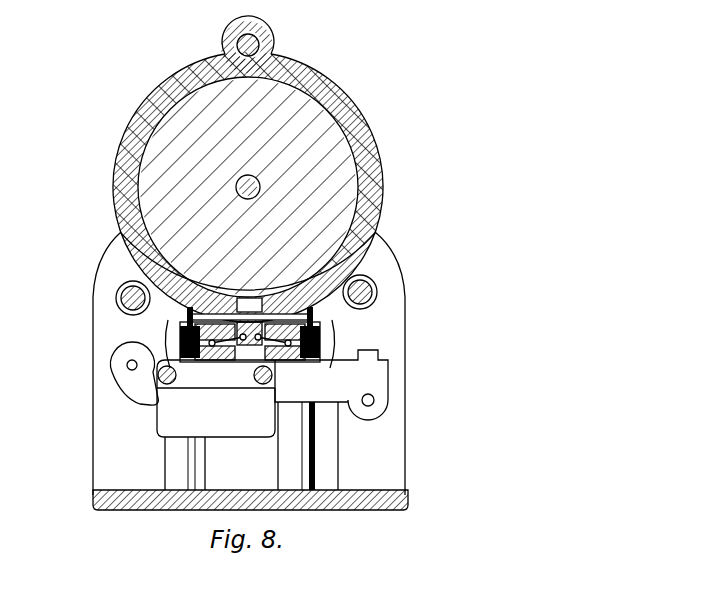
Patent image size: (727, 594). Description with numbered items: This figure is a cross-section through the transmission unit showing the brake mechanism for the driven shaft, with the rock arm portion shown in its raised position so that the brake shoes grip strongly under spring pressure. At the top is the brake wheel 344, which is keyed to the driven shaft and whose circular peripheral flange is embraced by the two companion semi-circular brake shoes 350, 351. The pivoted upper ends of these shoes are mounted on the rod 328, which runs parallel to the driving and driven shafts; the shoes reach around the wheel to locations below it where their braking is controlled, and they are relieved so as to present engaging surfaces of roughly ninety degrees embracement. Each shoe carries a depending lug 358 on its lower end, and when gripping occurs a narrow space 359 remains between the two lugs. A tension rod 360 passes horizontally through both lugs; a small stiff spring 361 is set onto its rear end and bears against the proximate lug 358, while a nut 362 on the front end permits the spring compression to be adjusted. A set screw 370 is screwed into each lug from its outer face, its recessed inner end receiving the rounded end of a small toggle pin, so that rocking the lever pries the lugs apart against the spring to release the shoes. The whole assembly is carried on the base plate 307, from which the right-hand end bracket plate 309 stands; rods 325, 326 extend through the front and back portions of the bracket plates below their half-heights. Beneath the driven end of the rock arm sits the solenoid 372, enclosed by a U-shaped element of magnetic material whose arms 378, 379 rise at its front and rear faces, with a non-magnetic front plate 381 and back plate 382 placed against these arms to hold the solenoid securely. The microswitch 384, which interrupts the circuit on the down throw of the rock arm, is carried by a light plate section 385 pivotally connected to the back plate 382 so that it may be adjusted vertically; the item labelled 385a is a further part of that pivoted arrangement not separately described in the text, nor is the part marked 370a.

The base plate 307 is at (405, 499).
The right hand end bracket plate 309 is at (390, 340).
The rod 325 is at (378, 286).
The rod 326 is at (116, 300).
The rod 328 is at (266, 36).
The brake wheel 344 is at (333, 128).
The brake shoe 350 is at (367, 158).
The brake shoe 351 is at (127, 163).
The depending lug 358 is at (300, 368).
The narrow space 359 is at (148, 243).
The tension rod 360 is at (132, 255).
The spring 361 is at (188, 311).
The nut 362 is at (313, 308).
The set screw 370 is at (180, 338).
The spring block 370a is at (182, 350).
The solenoid 372 is at (283, 472).
The arm of U-shaped enclosure 378 is at (197, 461).
The arm of U-shaped enclosure 379 is at (312, 453).
The front plate 381 is at (318, 441).
The back plate 382 is at (188, 452).
The microswitch 384 is at (216, 412).
The plate section 385 is at (288, 394).
The pawl 385a is at (124, 366).